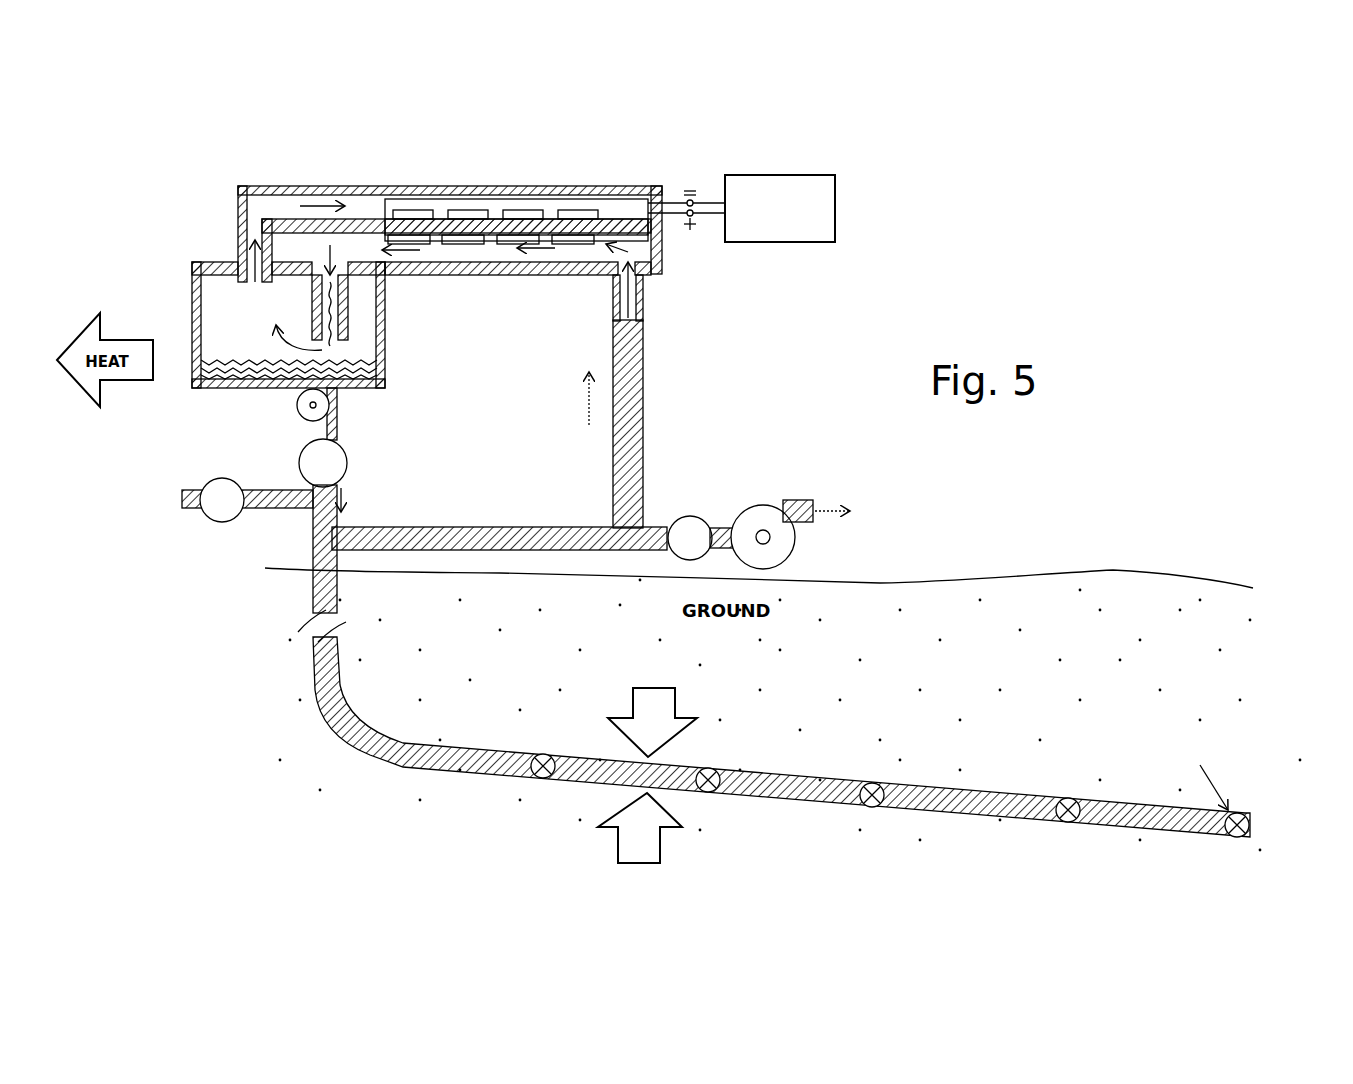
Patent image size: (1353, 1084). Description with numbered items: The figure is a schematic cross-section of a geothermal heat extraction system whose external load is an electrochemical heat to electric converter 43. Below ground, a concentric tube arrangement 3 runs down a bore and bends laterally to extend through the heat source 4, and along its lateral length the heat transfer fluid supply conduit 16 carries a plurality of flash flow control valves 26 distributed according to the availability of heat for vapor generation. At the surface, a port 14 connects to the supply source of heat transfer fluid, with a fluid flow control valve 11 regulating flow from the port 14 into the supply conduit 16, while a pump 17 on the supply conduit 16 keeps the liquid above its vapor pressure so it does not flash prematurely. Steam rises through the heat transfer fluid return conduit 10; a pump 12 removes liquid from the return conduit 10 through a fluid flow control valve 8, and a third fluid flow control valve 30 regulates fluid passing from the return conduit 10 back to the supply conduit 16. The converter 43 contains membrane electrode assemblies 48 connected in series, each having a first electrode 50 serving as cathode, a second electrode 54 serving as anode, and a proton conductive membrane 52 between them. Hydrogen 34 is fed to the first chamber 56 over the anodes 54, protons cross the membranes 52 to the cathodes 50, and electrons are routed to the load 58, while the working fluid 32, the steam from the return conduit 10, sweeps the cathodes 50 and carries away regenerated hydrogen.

The concentric tube arrangement 3 is at (375, 752).
The heat source 4 is at (615, 718).
The fluid flow control valve 8 is at (690, 538).
The heat transfer fluid return conduit 10 is at (580, 527).
The fluid flow control valve 11 is at (222, 500).
The pump 12 is at (795, 545).
The port 14 is at (186, 505).
The heat transfer fluid supply conduit 16 is at (272, 508).
The pump 17 is at (297, 405).
The flash flow control valves 26 is at (543, 770).
The third fluid flow control valve 30 is at (323, 463).
The working fluid 32 is at (398, 270).
The hydrogen 34 is at (240, 255).
The electrochemical heat to electric converter 43 is at (218, 200).
The membrane electrode assemblies 48 is at (505, 262).
The first electrode 50 is at (575, 262).
The proton conductive membrane 52 is at (562, 228).
The second electrode 54 is at (594, 236).
The first chamber 56 is at (366, 205).
The load 58 is at (835, 208).